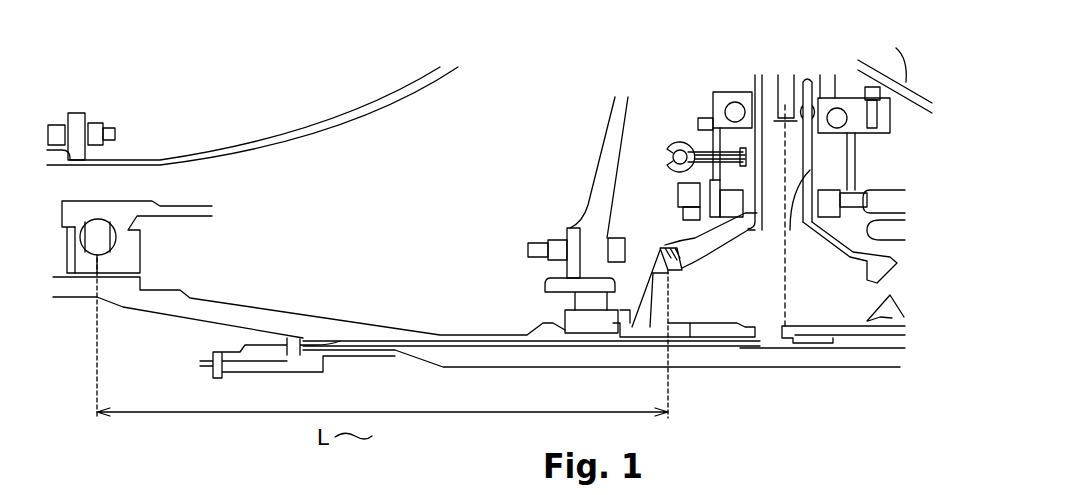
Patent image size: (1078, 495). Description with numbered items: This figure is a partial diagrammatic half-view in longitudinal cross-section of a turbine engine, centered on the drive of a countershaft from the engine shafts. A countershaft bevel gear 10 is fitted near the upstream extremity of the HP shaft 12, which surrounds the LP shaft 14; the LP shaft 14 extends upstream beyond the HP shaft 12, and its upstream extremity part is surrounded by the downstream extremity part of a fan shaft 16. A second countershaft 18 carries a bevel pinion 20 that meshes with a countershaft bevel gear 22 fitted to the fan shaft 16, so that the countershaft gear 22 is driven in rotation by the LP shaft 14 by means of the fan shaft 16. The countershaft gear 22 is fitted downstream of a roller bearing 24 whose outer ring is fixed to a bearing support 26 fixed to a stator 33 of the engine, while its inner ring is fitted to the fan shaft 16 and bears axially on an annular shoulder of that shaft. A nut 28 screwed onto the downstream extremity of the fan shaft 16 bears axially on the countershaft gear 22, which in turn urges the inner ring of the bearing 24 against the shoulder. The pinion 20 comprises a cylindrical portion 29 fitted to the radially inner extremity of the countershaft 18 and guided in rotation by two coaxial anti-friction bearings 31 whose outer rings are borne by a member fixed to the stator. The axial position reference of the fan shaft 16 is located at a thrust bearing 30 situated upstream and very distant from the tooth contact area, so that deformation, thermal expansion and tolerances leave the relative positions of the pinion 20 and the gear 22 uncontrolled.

The countershaft bevel gear 10 is at (885, 305).
The HP shaft 12 is at (814, 330).
The LP shaft 14 is at (740, 370).
The fan shaft 16 is at (366, 334).
The second countershaft 18 is at (803, 85).
The bevel pinion 20 is at (703, 247).
The countershaft bevel gear 22 is at (652, 258).
The roller bearing 24 is at (527, 299).
The bearing support 26 is at (603, 136).
The nut 28 is at (715, 330).
The cylindrical portion 29 is at (790, 222).
The thrust bearing 30 is at (210, 249).
The coaxial anti-friction bearings 31 is at (840, 197).
The stator 33 is at (908, 85).